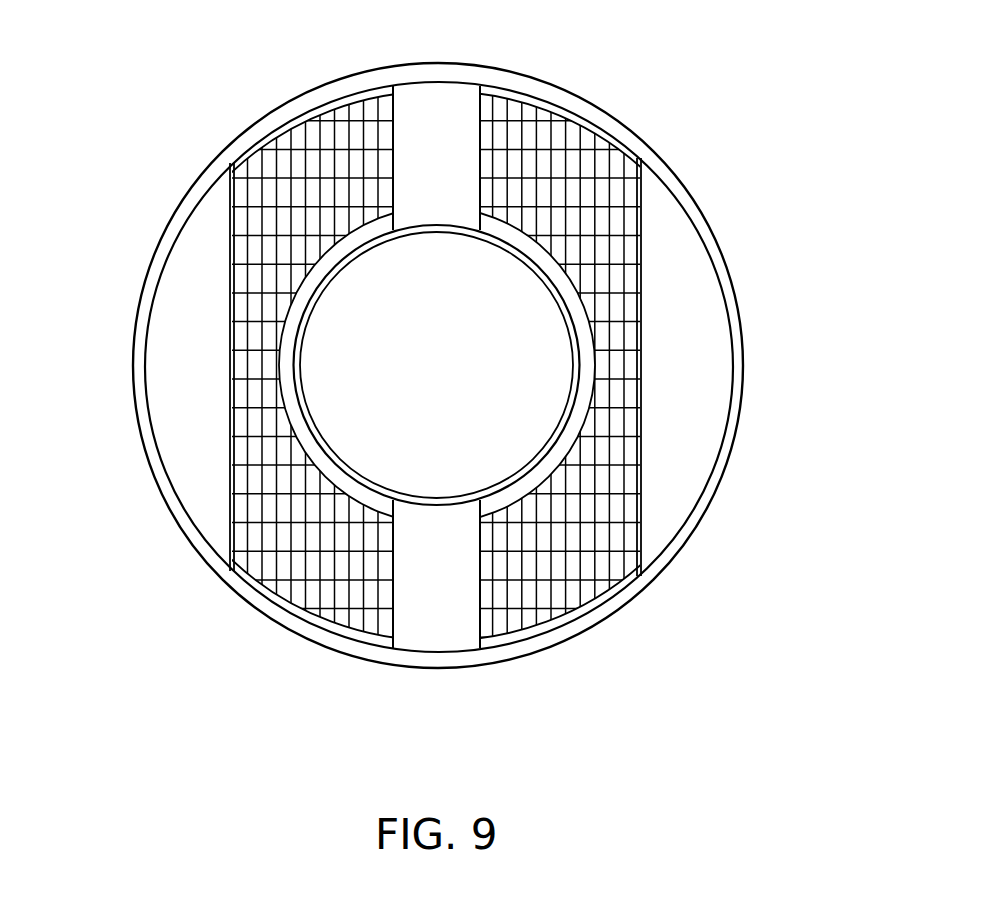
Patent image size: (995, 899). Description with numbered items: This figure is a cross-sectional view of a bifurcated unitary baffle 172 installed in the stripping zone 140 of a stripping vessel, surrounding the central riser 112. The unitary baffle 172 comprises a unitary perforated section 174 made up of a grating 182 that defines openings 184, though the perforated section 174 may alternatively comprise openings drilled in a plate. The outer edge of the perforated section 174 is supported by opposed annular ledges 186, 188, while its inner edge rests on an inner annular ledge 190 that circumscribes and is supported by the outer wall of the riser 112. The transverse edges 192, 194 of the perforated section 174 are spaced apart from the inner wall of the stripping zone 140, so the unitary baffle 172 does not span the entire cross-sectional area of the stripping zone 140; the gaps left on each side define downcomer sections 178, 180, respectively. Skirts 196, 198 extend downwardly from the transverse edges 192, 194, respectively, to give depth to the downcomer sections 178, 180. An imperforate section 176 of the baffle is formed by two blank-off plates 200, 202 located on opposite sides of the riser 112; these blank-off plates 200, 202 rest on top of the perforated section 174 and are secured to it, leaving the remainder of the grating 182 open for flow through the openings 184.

The riser 112 is at (453, 503).
The stripping zone 140 is at (702, 232).
The unitary baffle 172 is at (830, 468).
The unitary perforated section 174 is at (573, 582).
The imperforate section 176 is at (457, 640).
The downcomer section 178 is at (702, 283).
The downcomer section 180 is at (178, 268).
The grating 182 is at (618, 523).
The openings 184 is at (313, 570).
The annular ledge 186 is at (357, 100).
The annular ledge 188 is at (547, 622).
The inner annular ledge 190 is at (541, 268).
The transverse edge 192 is at (642, 362).
The transverse edge 194 is at (233, 355).
The skirt 196 is at (642, 408).
The skirt 198 is at (233, 408).
The blank-off plate 200 is at (417, 637).
The blank-off plate 202 is at (438, 100).